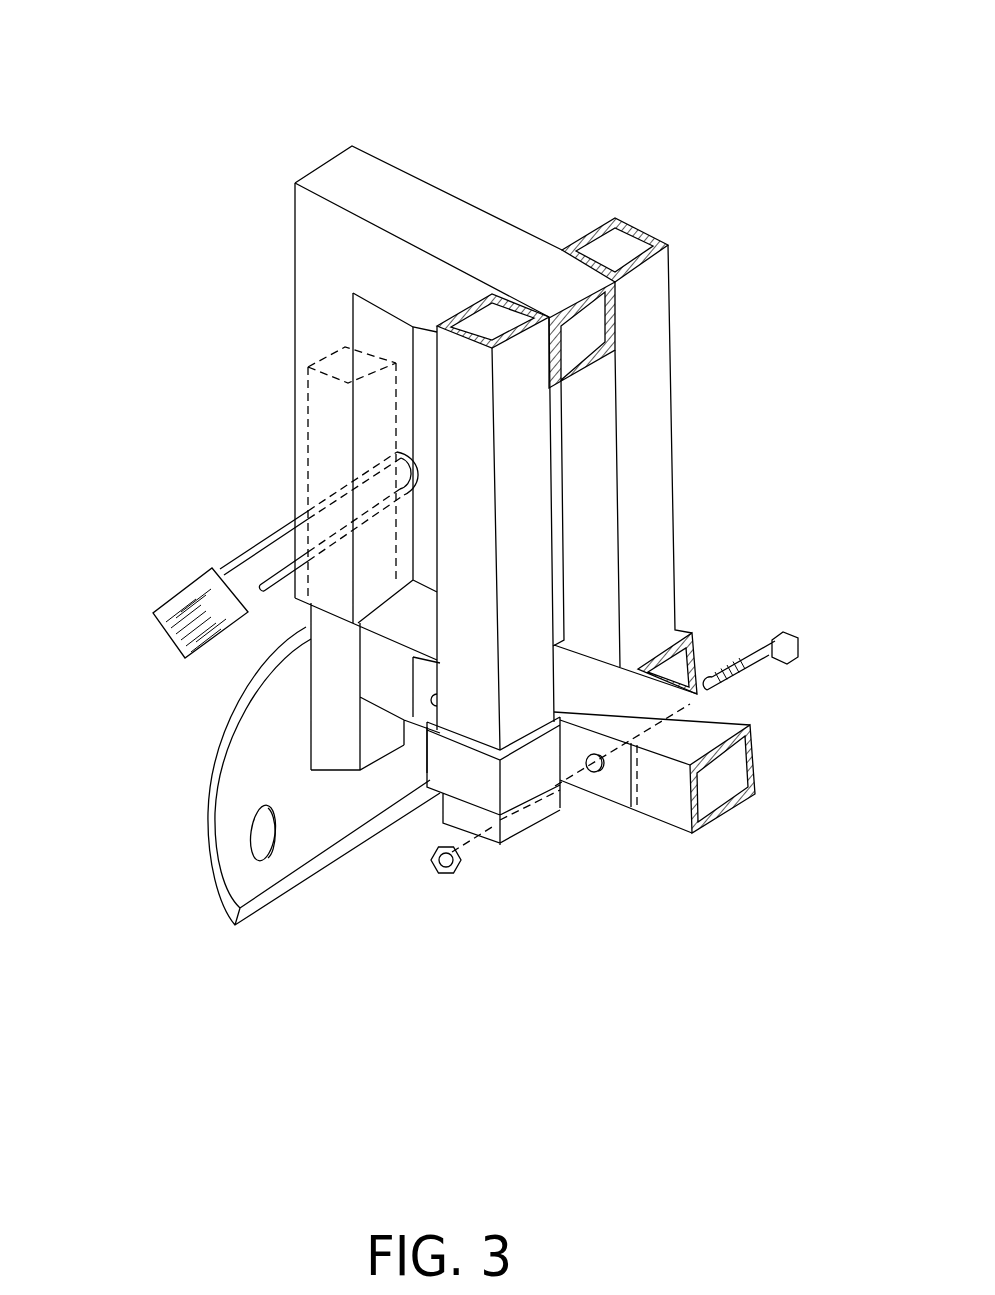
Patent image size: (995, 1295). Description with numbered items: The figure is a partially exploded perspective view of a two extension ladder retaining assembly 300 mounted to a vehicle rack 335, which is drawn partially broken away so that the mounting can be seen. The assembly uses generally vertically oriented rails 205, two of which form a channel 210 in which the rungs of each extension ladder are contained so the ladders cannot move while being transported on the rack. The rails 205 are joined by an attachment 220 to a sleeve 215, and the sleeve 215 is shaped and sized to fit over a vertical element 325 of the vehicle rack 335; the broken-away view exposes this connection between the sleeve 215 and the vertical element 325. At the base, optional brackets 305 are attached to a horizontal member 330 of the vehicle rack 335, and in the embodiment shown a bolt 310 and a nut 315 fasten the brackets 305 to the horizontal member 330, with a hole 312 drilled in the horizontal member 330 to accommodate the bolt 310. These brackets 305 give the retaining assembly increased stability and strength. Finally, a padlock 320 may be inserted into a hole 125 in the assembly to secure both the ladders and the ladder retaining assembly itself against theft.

The two extension ladder retaining assembly 300 is at (245, 124).
The attachment 220 is at (428, 205).
The channel 210 is at (558, 496).
The sleeve 215 is at (328, 302).
The vertical element 325 is at (327, 418).
The rail 205 is at (648, 410).
The hole 125 is at (307, 547).
The optional bracket 305 is at (695, 628).
The bolt 310 is at (760, 647).
The padlock 320 is at (176, 617).
The horizontal member 330 is at (693, 730).
The vehicle rack 335 is at (260, 765).
The hole 312 is at (598, 768).
The nut 315 is at (441, 882).